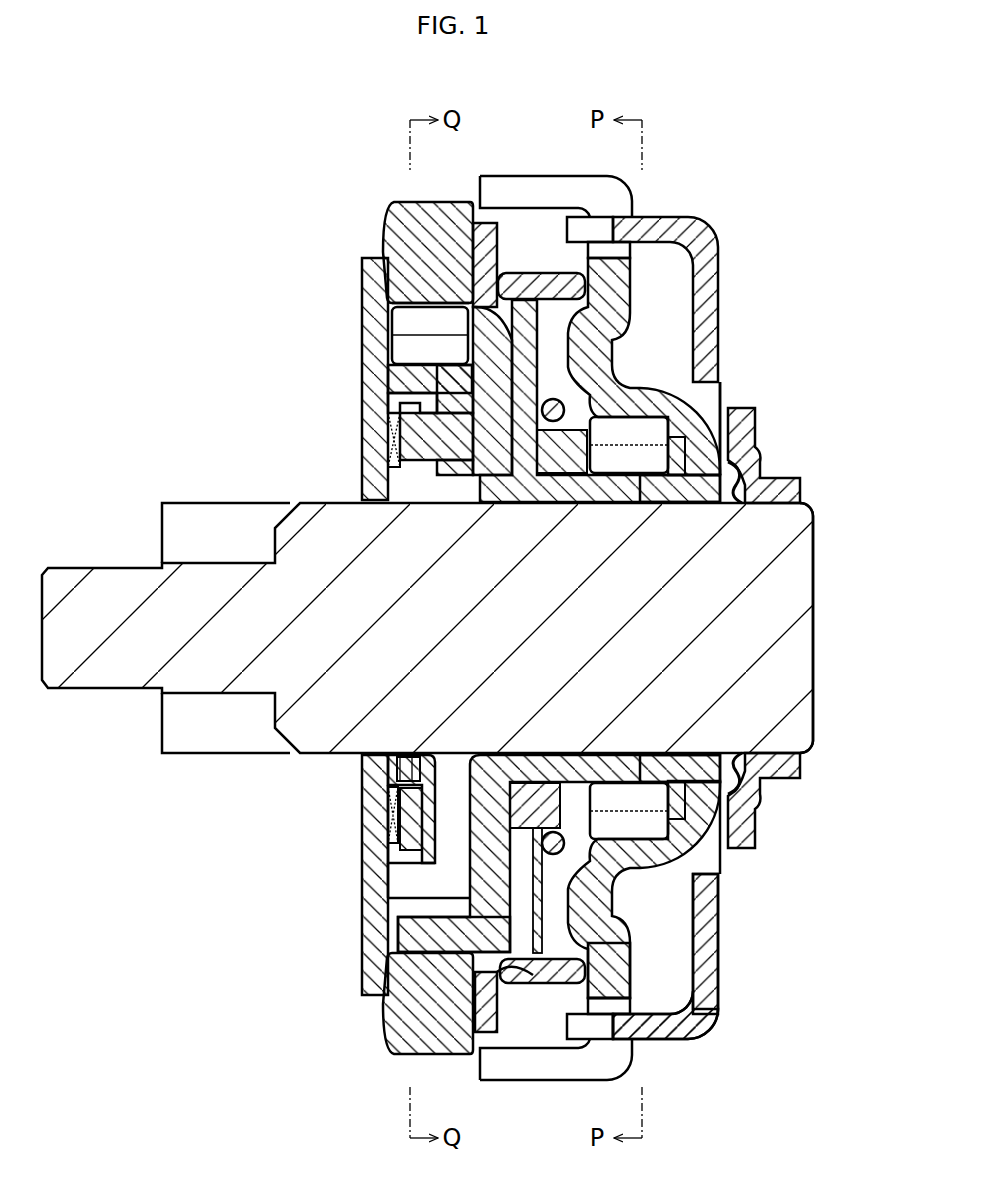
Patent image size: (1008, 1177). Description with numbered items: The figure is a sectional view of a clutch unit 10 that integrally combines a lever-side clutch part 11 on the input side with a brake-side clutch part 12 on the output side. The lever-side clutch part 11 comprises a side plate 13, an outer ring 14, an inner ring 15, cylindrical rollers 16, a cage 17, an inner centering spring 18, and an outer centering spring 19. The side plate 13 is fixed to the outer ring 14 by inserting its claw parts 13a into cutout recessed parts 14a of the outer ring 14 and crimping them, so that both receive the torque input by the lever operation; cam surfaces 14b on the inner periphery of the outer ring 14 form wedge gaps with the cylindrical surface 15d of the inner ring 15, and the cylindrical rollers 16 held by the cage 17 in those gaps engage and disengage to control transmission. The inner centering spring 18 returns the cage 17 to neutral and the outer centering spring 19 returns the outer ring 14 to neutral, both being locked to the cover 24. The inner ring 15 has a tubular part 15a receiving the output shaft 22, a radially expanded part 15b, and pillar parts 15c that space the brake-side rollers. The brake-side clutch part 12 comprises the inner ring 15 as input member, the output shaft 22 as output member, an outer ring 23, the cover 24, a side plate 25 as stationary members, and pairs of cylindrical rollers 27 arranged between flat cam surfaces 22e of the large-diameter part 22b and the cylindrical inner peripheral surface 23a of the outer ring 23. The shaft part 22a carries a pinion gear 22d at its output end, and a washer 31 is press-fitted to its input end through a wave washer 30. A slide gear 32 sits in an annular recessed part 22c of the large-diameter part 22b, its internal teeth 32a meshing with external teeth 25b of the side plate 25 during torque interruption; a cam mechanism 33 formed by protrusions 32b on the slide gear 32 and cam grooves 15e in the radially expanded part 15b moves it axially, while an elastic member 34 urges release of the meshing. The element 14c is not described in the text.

The clutch unit 10 is at (745, 198).
The lever-side clutch part 11 is at (730, 398).
The brake-side clutch part 12 is at (344, 262).
The side plate 13 is at (722, 258).
The claw parts 13a is at (655, 1038).
The outer ring 14 is at (710, 866).
The cutout recessed parts 14a is at (705, 991).
The cam surfaces 14b is at (650, 850).
The cover 14c is at (548, 190).
The inner ring 15 is at (647, 500).
The tubular part 15a is at (600, 490).
The radially expanded part 15b is at (445, 928).
The pillar parts 15c is at (430, 1000).
The cylindrical surface 15d is at (652, 760).
The cam grooves 15e is at (500, 448).
The cylindrical rollers 16 is at (642, 418).
The cage 17 is at (690, 822).
The inner centering spring 18 is at (553, 396).
The outer centering spring 19 is at (543, 988).
The output shaft 22 is at (112, 562).
The shaft part 22a is at (815, 592).
The large-diameter part 22b is at (420, 828).
The annular recessed part 22c is at (402, 800).
The pinion gear 22d is at (198, 520).
The cam surfaces 22e is at (405, 352).
The outer ring 23 is at (408, 198).
The cylindrical inner peripheral surface 23a is at (432, 300).
The cover 24 is at (512, 228).
The side plate 25 is at (358, 972).
The teeth part 25b is at (410, 755).
The cylindrical rollers 27 is at (410, 327).
The wave washer 30 is at (762, 480).
The washer 31 is at (790, 778).
The slide gear 32 is at (392, 405).
The teeth part 32a is at (400, 470).
The protrusions 32b is at (460, 452).
The cam mechanism 33 is at (447, 560).
The elastic member 34 is at (388, 812).